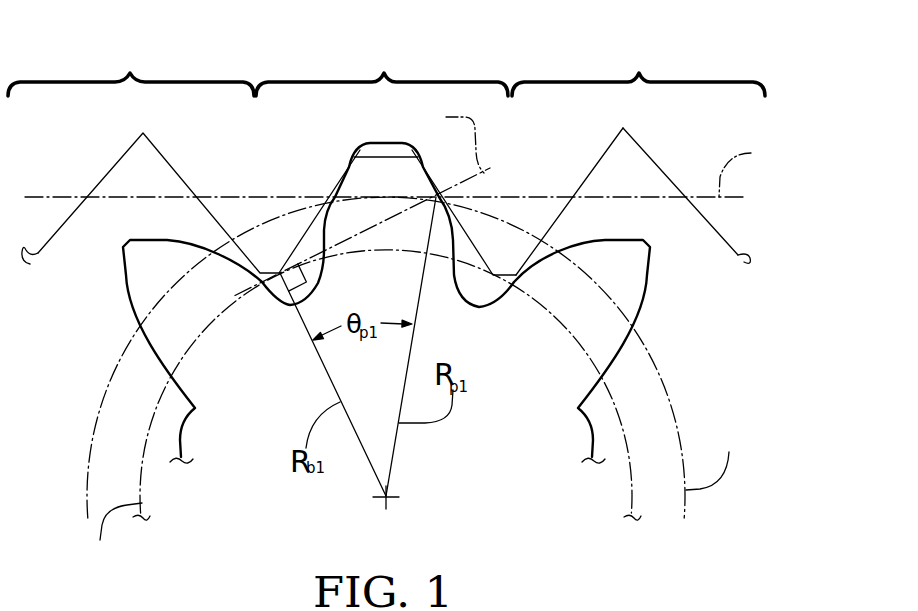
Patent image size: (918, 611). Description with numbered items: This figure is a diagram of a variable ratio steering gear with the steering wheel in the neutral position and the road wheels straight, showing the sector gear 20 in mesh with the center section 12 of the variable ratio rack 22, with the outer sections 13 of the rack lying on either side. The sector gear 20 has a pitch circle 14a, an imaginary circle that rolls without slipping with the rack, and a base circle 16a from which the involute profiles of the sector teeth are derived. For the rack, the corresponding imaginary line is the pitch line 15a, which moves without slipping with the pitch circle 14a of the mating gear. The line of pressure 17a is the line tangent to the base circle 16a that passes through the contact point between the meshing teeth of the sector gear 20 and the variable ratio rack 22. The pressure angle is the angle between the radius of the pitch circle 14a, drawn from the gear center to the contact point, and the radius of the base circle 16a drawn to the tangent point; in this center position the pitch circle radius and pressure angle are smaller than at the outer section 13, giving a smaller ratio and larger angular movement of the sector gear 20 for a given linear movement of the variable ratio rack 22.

The center section 12 is at (378, 58).
The outer section 13 is at (386, 151).
The pitch circle 14a is at (668, 390).
The pitch line 15a is at (735, 197).
The base circle 16a is at (141, 485).
The line of pressure 17a is at (470, 184).
The sector gear 20 is at (641, 298).
The variable ratio rack 22 is at (716, 233).